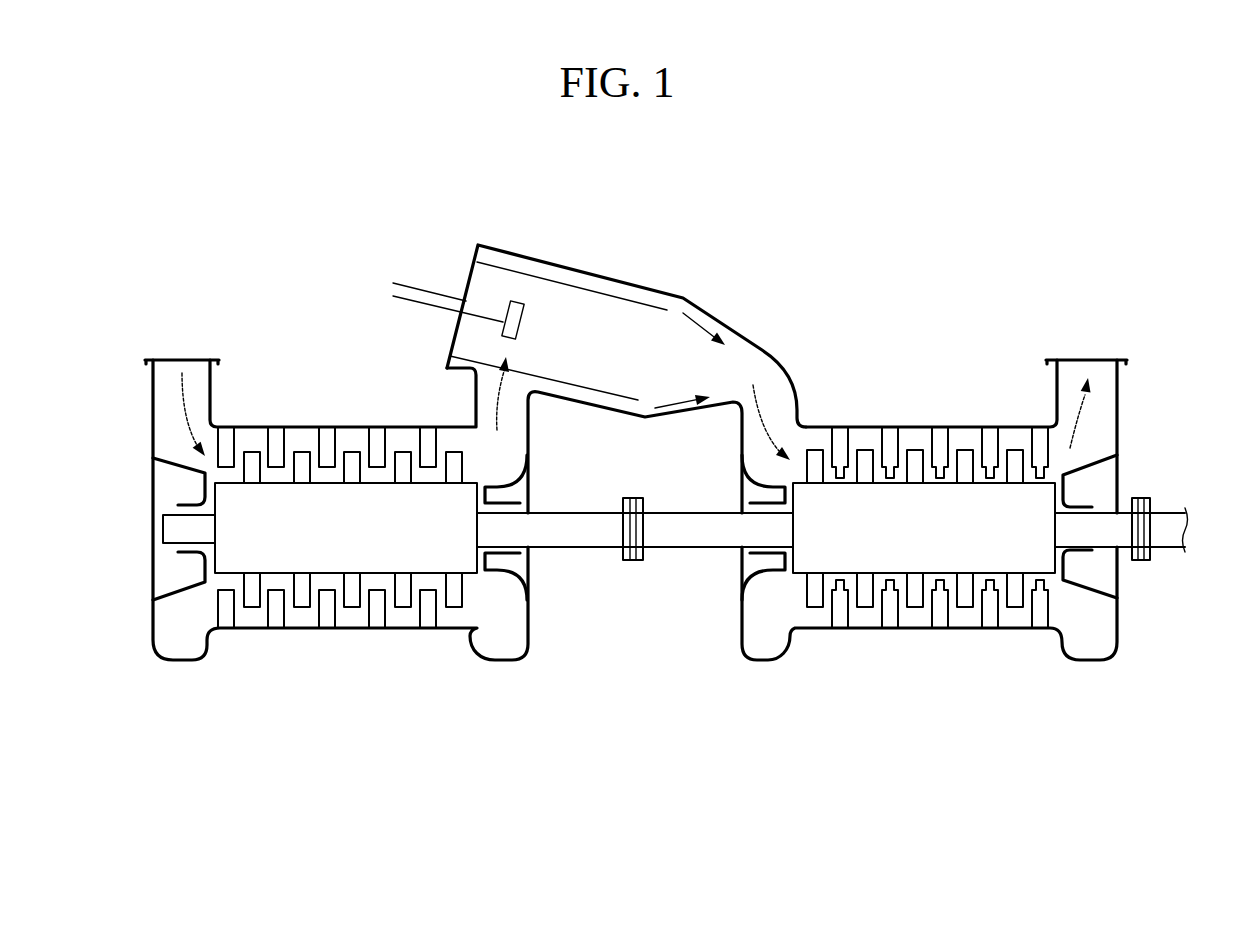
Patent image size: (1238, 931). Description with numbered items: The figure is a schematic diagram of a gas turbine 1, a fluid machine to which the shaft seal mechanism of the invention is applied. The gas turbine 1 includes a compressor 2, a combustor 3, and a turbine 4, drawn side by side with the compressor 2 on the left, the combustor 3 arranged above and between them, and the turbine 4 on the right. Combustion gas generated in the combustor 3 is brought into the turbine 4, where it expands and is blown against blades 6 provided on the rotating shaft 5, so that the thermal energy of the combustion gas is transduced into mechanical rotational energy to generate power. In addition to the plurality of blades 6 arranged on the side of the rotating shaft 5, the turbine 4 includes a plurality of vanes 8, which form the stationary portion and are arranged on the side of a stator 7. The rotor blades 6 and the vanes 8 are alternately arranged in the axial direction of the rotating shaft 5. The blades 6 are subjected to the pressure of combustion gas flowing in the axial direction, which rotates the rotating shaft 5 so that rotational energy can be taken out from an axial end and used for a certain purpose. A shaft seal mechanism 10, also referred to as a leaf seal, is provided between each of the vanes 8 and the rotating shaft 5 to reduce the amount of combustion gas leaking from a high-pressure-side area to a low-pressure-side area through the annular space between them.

The gas turbine 1 is at (985, 232).
The compressor 2 is at (528, 700).
The combustor 3 is at (445, 222).
The turbine 4 is at (1117, 700).
The rotating shaft 5 is at (688, 548).
The blades 6 is at (915, 443).
The stator 7 is at (915, 632).
The vanes 8 is at (880, 448).
The shaft seal mechanism 10 is at (942, 485).